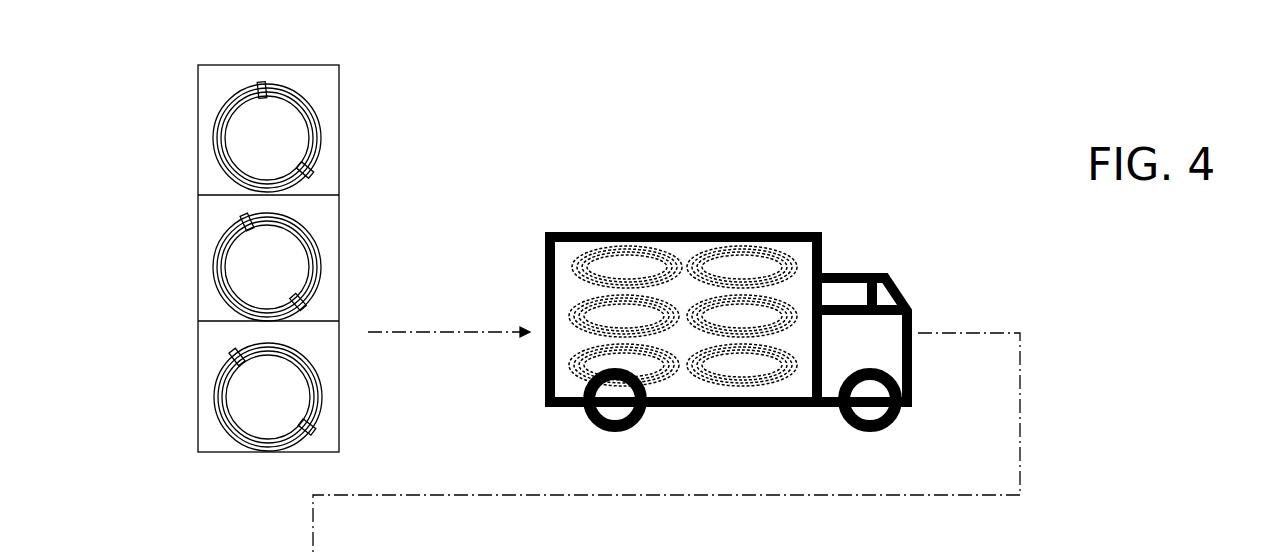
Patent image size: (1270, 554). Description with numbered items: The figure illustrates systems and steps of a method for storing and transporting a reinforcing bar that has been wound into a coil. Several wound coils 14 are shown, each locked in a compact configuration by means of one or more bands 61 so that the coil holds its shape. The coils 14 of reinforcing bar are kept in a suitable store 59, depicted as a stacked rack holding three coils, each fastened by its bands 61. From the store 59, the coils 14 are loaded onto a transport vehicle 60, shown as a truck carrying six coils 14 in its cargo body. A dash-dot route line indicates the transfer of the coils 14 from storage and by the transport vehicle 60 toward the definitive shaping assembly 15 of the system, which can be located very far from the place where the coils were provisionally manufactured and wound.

The wound coil 14 is at (313, 91).
The store 59 is at (339, 132).
The transport vehicle 60 is at (836, 250).
The band 61 is at (262, 82).
The definitive shaping assembly 15 is at (886, 553).